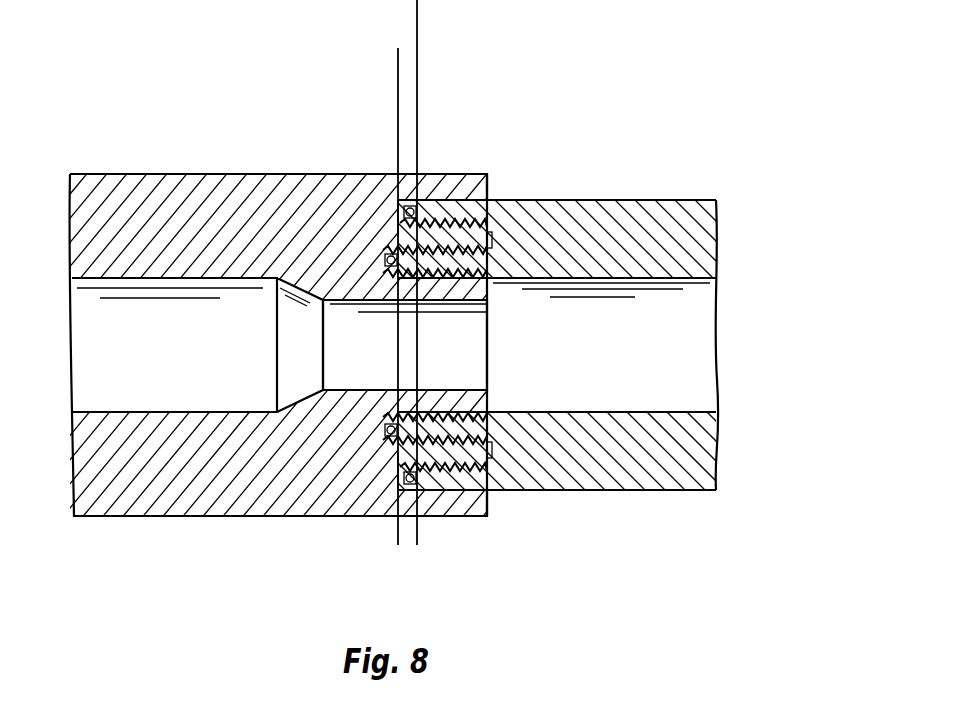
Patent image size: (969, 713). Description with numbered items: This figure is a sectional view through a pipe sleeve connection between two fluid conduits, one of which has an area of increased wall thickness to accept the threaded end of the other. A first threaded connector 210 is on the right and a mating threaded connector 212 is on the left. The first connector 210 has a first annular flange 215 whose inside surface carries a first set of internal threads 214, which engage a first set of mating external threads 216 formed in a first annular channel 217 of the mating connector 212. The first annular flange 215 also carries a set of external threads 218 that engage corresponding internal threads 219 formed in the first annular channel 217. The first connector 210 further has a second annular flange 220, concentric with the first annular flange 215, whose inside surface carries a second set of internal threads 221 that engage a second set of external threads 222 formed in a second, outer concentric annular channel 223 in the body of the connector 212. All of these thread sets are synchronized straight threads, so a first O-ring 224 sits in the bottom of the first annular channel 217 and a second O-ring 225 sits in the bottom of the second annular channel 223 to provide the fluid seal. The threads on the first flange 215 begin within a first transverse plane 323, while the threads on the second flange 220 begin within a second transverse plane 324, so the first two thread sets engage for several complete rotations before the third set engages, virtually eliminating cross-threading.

The first threaded connector 210 is at (623, 200).
The mating threaded connector 212 is at (160, 195).
The first set of internal threads 214 is at (487, 412).
The first annular flange 215 is at (492, 436).
The first set of mating external threads 216 is at (475, 490).
The first annular channel 217 is at (390, 415).
The set of external threads 218 is at (470, 200).
The set of corresponding internal threads 219 is at (405, 206).
The second annular flange 220 is at (470, 478).
The second set of internal threads 221 is at (456, 222).
The second set of external threads 222 is at (432, 470).
The second annular channel 223 is at (430, 220).
The first O-ring 224 is at (391, 437).
The second O-ring 225 is at (398, 468).
The first transverse plane 323 is at (398, 70).
The second transverse plane 324 is at (418, 13).